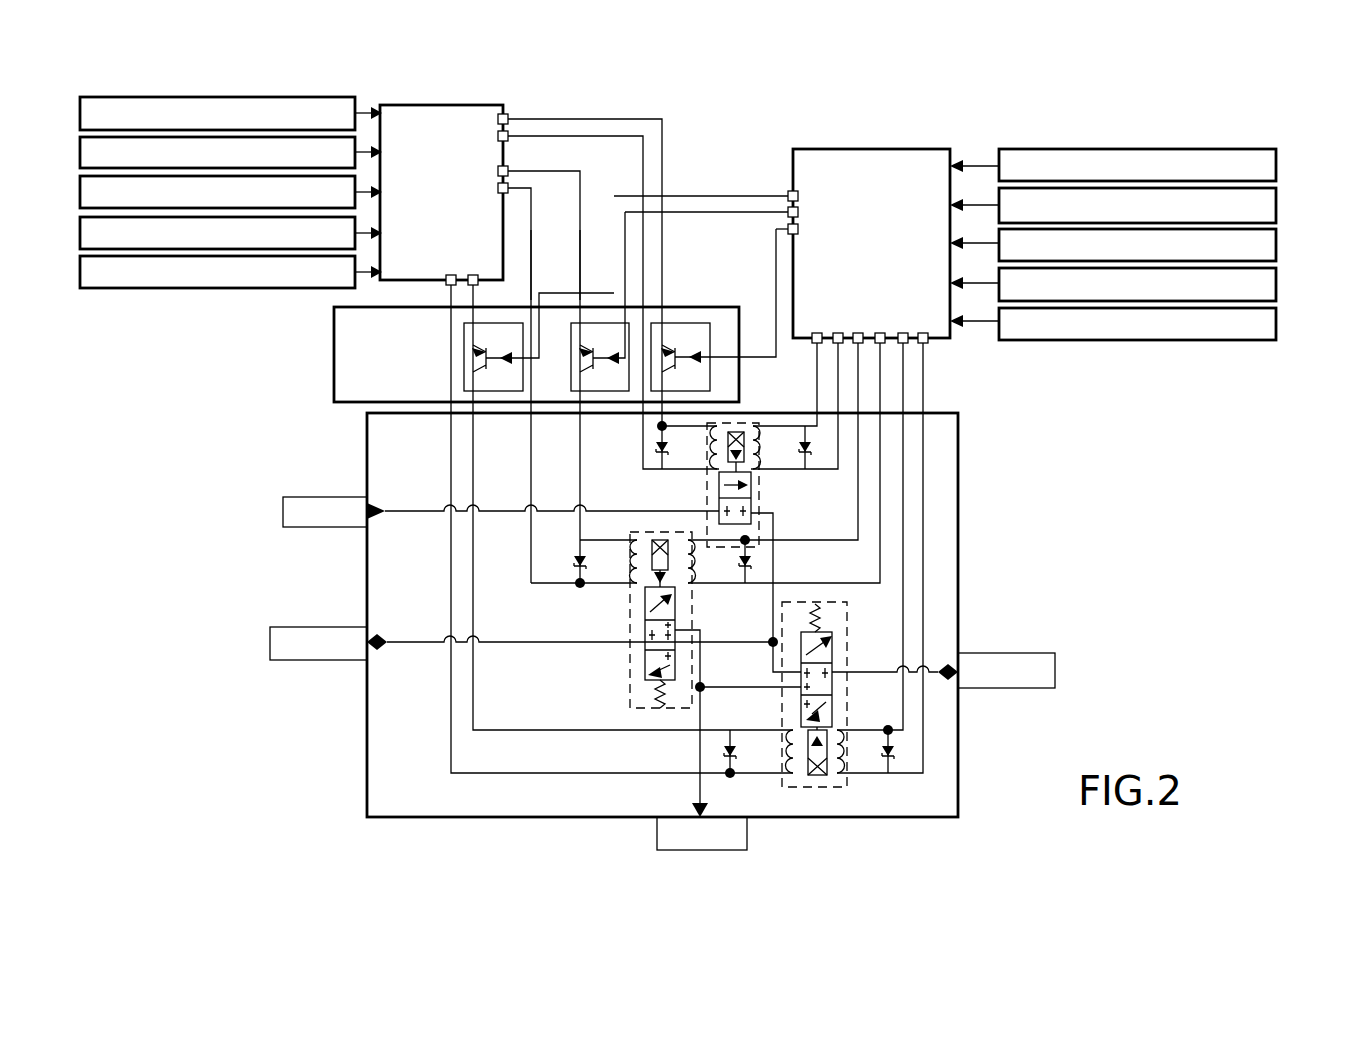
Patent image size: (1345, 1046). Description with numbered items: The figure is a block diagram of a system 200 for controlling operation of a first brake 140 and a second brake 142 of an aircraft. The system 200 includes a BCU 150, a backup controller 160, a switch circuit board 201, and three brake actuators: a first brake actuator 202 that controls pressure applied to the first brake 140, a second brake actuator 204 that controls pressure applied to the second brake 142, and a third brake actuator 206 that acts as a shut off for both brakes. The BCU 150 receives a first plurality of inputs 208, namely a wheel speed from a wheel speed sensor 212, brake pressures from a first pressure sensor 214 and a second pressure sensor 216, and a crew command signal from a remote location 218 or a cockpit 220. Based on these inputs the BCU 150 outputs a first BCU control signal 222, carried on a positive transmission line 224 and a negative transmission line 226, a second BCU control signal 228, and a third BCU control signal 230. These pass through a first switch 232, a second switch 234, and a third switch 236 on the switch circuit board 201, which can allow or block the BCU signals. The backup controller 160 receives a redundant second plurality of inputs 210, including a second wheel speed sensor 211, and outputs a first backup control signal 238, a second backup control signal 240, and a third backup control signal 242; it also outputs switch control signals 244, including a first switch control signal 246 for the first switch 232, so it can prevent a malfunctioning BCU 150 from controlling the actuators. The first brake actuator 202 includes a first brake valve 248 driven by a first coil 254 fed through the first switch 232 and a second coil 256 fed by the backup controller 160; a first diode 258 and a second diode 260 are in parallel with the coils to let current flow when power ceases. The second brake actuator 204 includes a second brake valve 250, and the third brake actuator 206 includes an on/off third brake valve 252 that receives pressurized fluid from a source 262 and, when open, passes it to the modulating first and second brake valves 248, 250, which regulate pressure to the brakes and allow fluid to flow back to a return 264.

The system 200 is at (1028, 100).
The first plurality of inputs 208 is at (236, 70).
The second plurality of inputs 210 is at (1152, 124).
The second wheel speed sensor 211 is at (1277, 162).
The wheel speed sensor 212 is at (350, 97).
The first pressure sensor 214 is at (358, 138).
The second pressure sensor 216 is at (360, 188).
The remote location 218 is at (372, 243).
The cockpit 220 is at (300, 291).
The BCU 150 is at (447, 105).
The backup controller 160 is at (870, 149).
The switch circuit board 201 is at (334, 360).
The first BCU control signal 222 is at (545, 178).
The positive transmission line 224 is at (592, 198).
The negative transmission line 226 is at (532, 247).
The second BCU control signal 228 is at (466, 262).
The third BCU control signal 230 is at (545, 111).
The first switch 232 is at (585, 323).
The second switch 234 is at (493, 323).
The third switch 236 is at (681, 323).
The first backup control signal 238 is at (856, 330).
The second backup control signal 240 is at (900, 330).
The third backup control signal 242 is at (814, 330).
The switch control signals 244 is at (808, 170).
The first switch control signal 246 is at (800, 212).
The first brake valve 248 is at (645, 657).
The second brake valve 250 is at (832, 682).
The third brake valve 252 is at (751, 498).
The first coil 254 is at (637, 555).
The second coil 256 is at (692, 568).
The first diode 258 is at (575, 564).
The second diode 260 is at (752, 562).
The source 262 is at (283, 511).
The return 264 is at (703, 850).
The first brake 140 is at (330, 660).
The second brake 142 is at (1030, 688).
The first brake actuator 202 is at (630, 700).
The second brake actuator 204 is at (847, 787).
The third brake actuator 206 is at (768, 530).